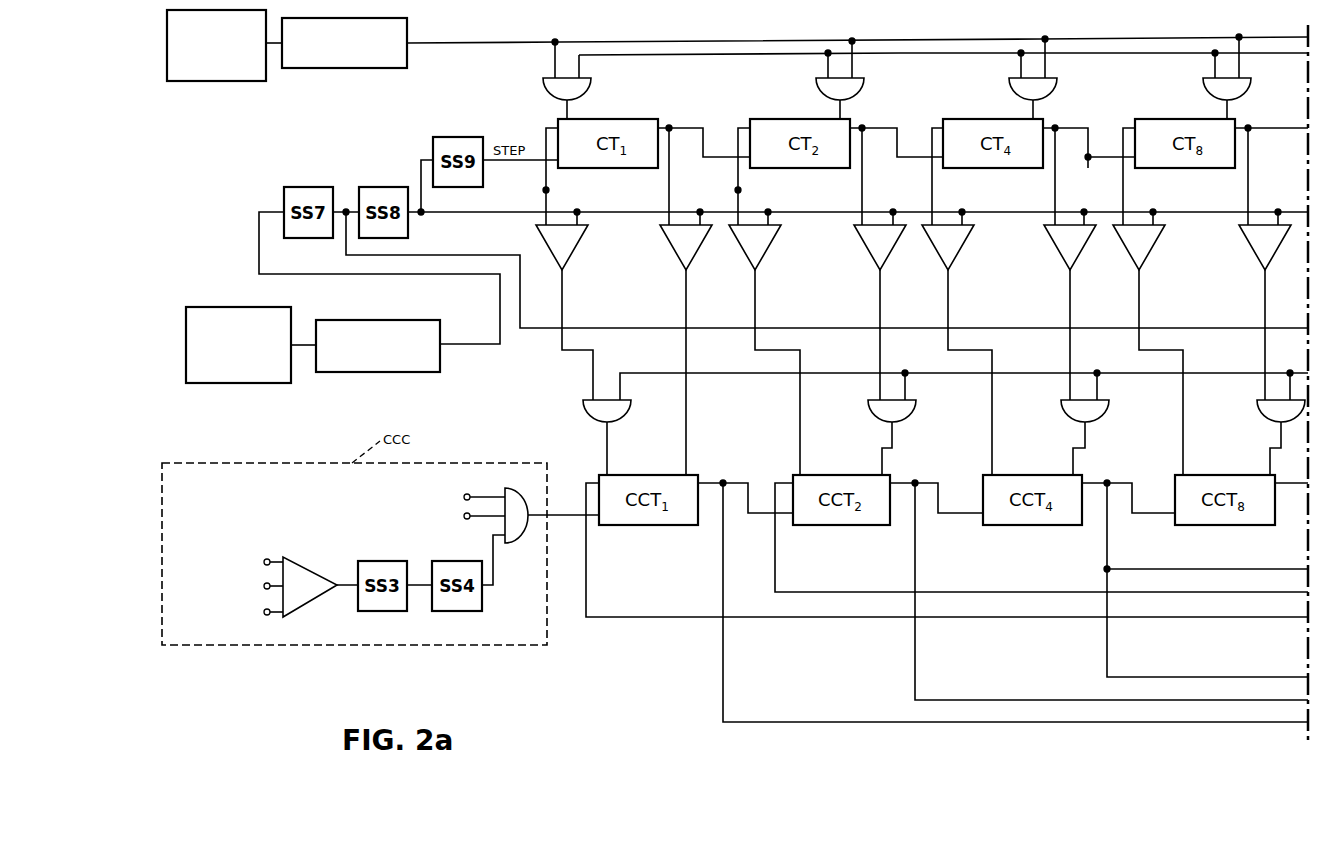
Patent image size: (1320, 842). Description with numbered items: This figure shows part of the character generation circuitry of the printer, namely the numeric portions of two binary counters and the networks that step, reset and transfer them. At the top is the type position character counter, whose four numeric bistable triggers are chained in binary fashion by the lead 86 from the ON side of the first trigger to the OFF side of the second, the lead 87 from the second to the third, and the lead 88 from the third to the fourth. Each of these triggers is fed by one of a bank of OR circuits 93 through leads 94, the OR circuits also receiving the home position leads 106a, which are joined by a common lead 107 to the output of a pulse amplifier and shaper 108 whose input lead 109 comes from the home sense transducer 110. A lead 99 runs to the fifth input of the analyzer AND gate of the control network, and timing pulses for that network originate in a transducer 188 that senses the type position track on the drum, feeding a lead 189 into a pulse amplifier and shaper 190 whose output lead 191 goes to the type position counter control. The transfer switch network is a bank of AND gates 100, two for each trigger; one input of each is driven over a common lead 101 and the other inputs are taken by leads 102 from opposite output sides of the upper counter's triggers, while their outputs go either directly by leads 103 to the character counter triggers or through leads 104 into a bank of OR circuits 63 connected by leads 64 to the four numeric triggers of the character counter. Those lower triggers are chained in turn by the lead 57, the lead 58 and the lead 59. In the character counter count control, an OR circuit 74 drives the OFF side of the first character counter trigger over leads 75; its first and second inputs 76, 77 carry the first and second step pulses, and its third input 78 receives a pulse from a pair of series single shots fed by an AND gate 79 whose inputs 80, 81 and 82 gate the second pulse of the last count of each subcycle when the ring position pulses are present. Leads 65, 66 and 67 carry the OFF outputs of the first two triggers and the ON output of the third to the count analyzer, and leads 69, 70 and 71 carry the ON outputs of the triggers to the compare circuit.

The lead 57 is at (733, 488).
The lead 58 is at (938, 490).
The lead 59 is at (1118, 488).
The bank of OR circuits 63 is at (627, 410).
The leads 64 is at (607, 455).
The lead 65 is at (655, 618).
The lead 66 is at (827, 594).
The lead 67 is at (1173, 570).
The lead 69 is at (723, 657).
The lead 70 is at (915, 657).
The lead 71 is at (1107, 653).
The OR circuit 74 is at (509, 496).
The leads 75 is at (576, 516).
The first input 76 is at (495, 497).
The second input 77 is at (492, 518).
The third input 78 is at (494, 565).
The AND gate 79 is at (303, 569).
The input 80 is at (277, 561).
The input 81 is at (281, 575).
The input 82 is at (280, 614).
The lead 86 is at (677, 126).
The lead 87 is at (887, 126).
The lead 88 is at (1071, 126).
The bank of OR circuits 93 is at (586, 94).
The leads 94 is at (566, 110).
The lead 99 is at (1235, 330).
The AND gates 100 is at (570, 253).
The common lead 101 is at (1010, 214).
The leads 102 is at (546, 190).
The leads 103 is at (686, 309).
The leads 104 is at (562, 309).
The leads 106a is at (555, 60).
The common lead 107 is at (466, 44).
The pulse amplifier and shaper 108 is at (378, 69).
The input lead 109 is at (272, 45).
The home sense transducer 110 is at (258, 81).
The transducer 188 is at (240, 307).
The lead 189 is at (298, 345).
The pulse amplifier and shaper 190 is at (446, 364).
The lead 191 is at (497, 346).